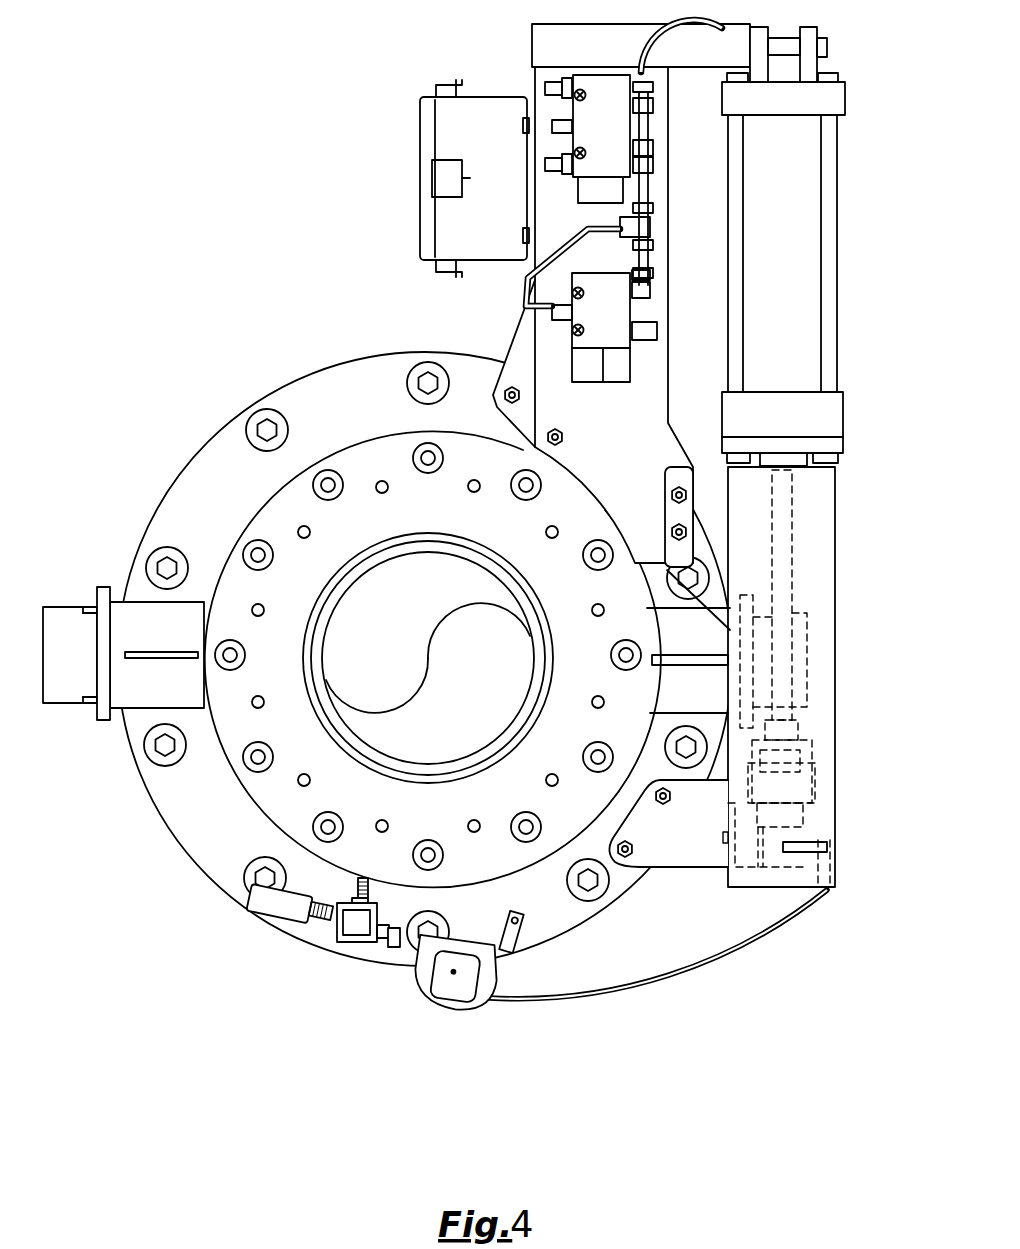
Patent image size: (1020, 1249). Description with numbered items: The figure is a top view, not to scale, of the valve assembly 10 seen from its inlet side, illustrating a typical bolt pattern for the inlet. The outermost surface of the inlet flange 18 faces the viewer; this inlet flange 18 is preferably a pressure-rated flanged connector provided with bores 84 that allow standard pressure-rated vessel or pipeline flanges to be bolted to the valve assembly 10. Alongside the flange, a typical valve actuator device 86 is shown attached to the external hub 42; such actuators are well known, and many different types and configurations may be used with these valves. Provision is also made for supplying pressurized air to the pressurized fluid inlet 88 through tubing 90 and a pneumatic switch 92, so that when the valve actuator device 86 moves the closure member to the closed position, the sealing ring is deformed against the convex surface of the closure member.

The valve assembly 10 is at (182, 472).
The inlet flange 18 is at (232, 828).
The bores 84 is at (382, 479).
The external hub 42 is at (805, 682).
The valve actuator device 86 is at (837, 224).
The pressurized fluid inlet 88 is at (347, 871).
The tubing 90 is at (718, 960).
The pneumatic switch 92 is at (825, 848).